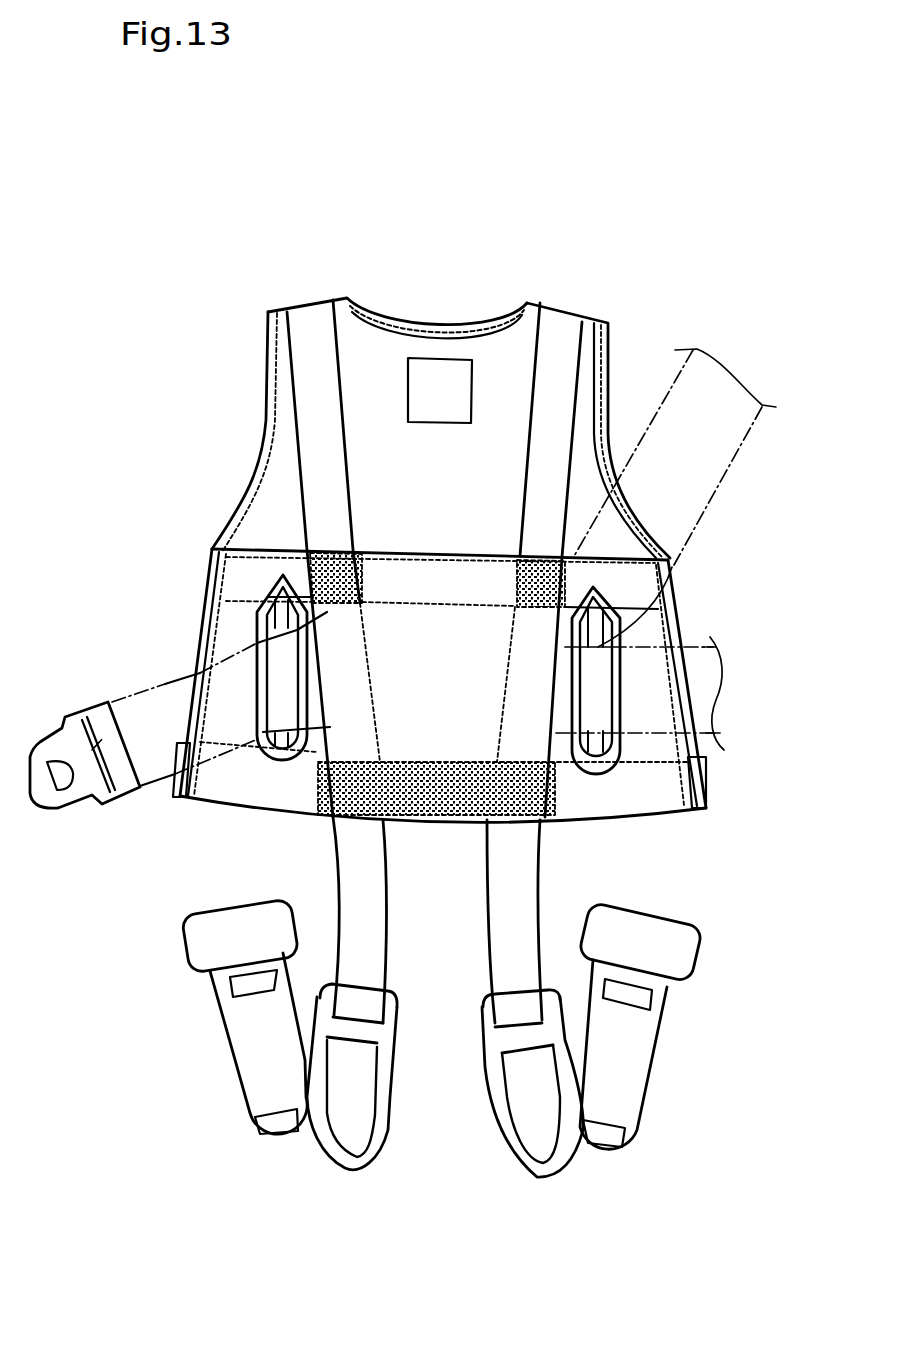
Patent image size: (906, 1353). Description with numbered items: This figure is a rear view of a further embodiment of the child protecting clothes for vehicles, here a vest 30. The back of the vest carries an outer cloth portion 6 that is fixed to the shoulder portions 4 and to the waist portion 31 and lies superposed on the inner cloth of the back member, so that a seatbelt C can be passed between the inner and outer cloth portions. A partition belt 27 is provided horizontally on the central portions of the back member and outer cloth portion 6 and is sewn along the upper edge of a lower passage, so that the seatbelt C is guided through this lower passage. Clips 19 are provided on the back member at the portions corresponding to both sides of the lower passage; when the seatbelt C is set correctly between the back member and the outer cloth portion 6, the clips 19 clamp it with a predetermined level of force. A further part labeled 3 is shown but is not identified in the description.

The vest body 3 is at (277, 520).
The shoulder portions 4 is at (374, 348).
The outer cloth portion 6 is at (523, 355).
The clips 19 is at (275, 622).
The partition belt 27 is at (233, 565).
The vest 30 is at (483, 297).
The waist portion 31 is at (647, 805).
The seatbelt C is at (717, 442).